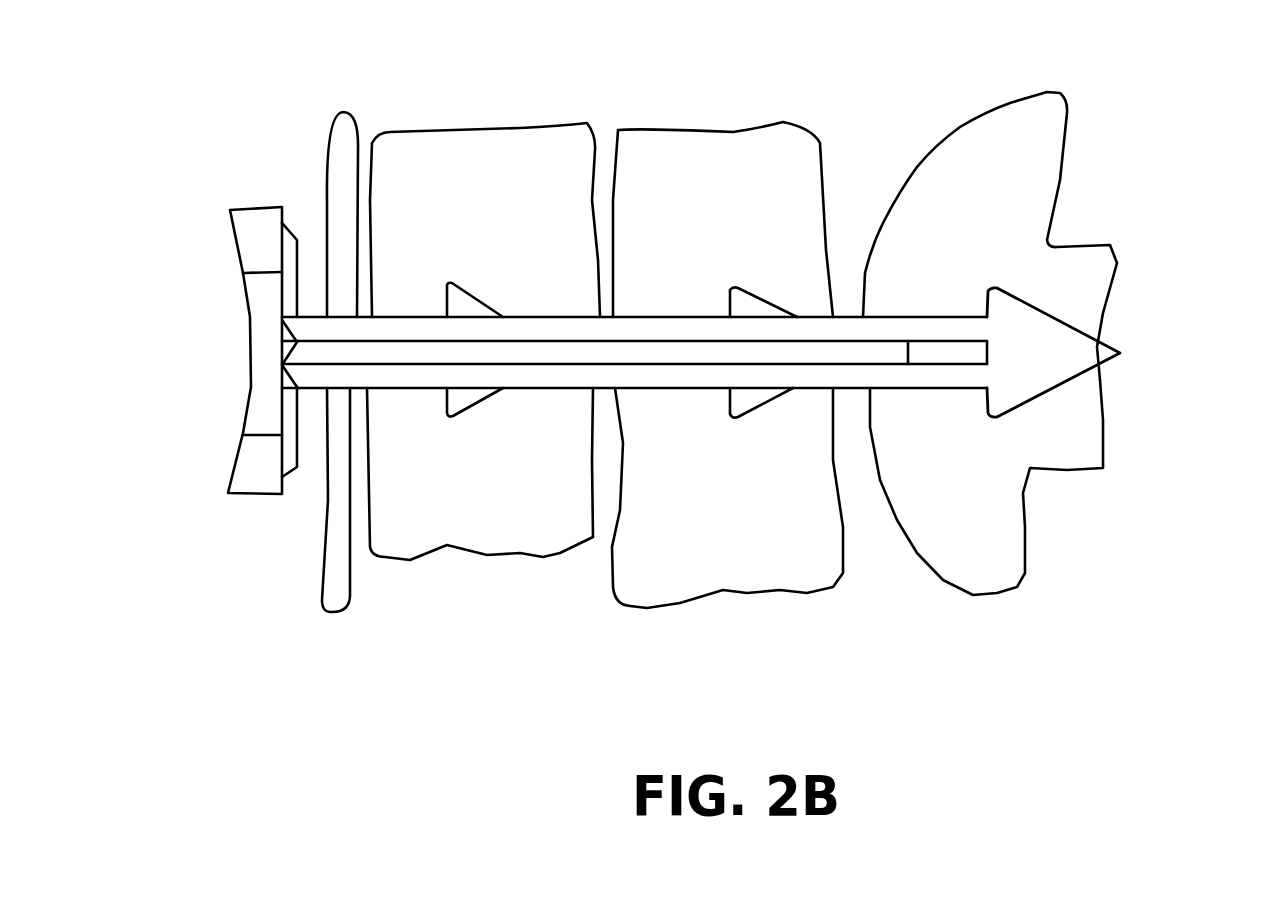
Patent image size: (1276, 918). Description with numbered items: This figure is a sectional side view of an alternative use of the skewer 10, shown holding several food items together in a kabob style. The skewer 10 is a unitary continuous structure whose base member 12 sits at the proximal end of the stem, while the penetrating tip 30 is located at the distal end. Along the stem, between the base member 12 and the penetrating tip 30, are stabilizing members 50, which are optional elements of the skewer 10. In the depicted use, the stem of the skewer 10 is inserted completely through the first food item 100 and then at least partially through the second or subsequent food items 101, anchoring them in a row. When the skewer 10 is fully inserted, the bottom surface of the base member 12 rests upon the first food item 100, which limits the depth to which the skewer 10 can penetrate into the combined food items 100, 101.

The skewer 10 is at (197, 133).
The base member 12 is at (230, 230).
The penetrating tip 30 is at (1120, 350).
The stabilizing member 50 is at (463, 420).
The first food item 100 is at (347, 113).
The second or subsequent food item 101 is at (518, 128).